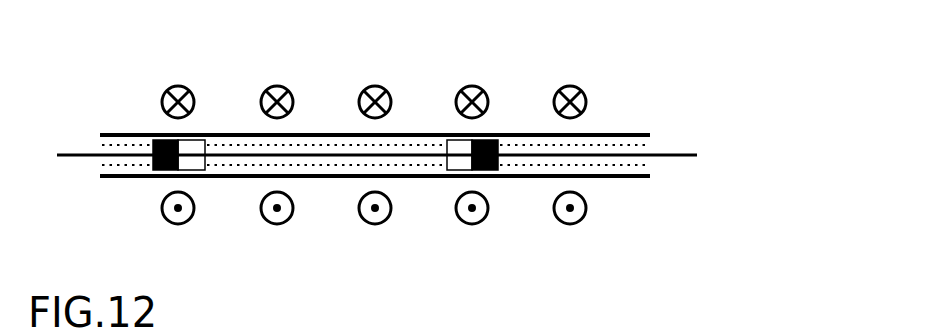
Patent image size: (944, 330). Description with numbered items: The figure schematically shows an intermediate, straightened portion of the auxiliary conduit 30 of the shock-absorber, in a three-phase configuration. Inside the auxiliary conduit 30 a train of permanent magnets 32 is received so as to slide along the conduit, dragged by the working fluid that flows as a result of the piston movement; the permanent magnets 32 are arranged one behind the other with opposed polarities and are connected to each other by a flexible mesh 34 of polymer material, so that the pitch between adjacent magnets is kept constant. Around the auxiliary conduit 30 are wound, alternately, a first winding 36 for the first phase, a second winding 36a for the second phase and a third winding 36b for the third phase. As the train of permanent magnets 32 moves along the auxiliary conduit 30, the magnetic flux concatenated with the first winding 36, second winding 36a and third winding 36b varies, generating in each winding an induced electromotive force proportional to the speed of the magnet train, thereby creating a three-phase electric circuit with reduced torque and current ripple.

The auxiliary conduit 30 is at (627, 132).
The permanent magnets 32 is at (200, 180).
The flexible mesh 34 is at (321, 168).
The first winding 36 is at (168, 84).
The second winding 36a is at (272, 84).
The third winding 36b is at (367, 84).